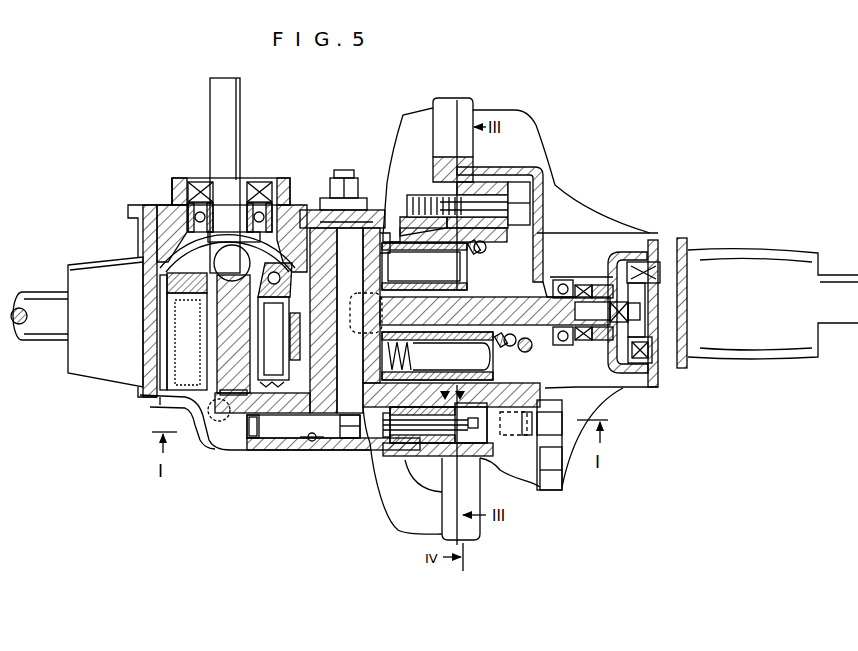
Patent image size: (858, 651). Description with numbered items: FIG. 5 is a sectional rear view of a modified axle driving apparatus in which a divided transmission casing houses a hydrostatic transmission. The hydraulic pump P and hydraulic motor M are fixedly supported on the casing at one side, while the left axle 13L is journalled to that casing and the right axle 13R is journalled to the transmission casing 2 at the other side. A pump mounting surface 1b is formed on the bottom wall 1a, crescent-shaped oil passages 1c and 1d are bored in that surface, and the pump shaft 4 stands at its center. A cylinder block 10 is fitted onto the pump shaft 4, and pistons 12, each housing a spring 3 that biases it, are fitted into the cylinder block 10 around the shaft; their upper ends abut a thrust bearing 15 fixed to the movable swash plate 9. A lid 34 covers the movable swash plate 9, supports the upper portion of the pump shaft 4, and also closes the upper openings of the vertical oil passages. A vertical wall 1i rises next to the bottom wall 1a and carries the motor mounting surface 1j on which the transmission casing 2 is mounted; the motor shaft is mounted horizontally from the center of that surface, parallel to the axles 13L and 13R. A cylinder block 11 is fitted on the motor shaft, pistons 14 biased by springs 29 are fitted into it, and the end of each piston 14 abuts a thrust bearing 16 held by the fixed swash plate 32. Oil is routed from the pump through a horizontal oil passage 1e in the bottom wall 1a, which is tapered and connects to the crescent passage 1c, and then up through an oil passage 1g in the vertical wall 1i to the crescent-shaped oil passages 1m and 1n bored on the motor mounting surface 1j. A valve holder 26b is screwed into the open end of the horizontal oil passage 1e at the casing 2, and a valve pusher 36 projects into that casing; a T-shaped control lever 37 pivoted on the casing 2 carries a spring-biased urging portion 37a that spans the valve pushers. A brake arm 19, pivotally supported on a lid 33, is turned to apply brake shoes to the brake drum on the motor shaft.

The pump shaft 4 is at (210, 127).
The lid 34 is at (175, 180).
The thrust bearing 15 is at (187, 258).
The axle 13L is at (48, 273).
The movable swash plate 9 is at (147, 275).
The cylinder block 10 is at (167, 363).
The hydraulic pump P is at (157, 321).
The pistons 12 is at (279, 325).
The bottom wall 1a is at (167, 411).
The springs 3 is at (197, 438).
The crescent-shaped oil passage 1c is at (260, 438).
The crescent-shaped oil passage 1d is at (253, 426).
The horizontal oil passage 1e is at (313, 441).
The oil passage 1g is at (360, 438).
The vertical wall 1i is at (322, 250).
The pump mounting surface 1b is at (300, 373).
The crescent-shaped oil passage 1n is at (362, 280).
The crescent-shaped oil passage 1m is at (344, 174).
The motor mounting surface 1j is at (397, 217).
The transmission casing 2 is at (560, 181).
The fixed swash plate 32 is at (515, 170).
The cylinder block 11 is at (445, 243).
The hydraulic motor M is at (513, 252).
The pistons 14 is at (424, 269).
The thrust bearing 16 is at (484, 258).
The springs 29 is at (480, 336).
The lid 33 is at (655, 240).
The brake arm 19 is at (684, 238).
The axle 13R is at (830, 282).
The valve holder 26b is at (407, 540).
The urging portion 37a is at (484, 452).
The valve pusher 36 is at (481, 447).
The control lever 37 is at (560, 391).